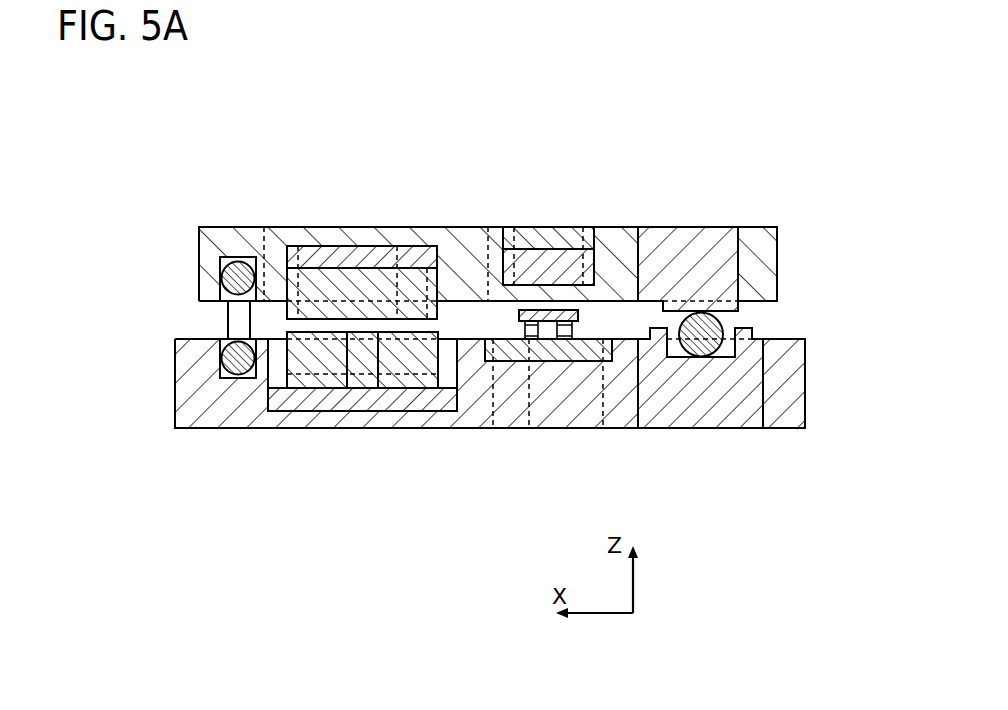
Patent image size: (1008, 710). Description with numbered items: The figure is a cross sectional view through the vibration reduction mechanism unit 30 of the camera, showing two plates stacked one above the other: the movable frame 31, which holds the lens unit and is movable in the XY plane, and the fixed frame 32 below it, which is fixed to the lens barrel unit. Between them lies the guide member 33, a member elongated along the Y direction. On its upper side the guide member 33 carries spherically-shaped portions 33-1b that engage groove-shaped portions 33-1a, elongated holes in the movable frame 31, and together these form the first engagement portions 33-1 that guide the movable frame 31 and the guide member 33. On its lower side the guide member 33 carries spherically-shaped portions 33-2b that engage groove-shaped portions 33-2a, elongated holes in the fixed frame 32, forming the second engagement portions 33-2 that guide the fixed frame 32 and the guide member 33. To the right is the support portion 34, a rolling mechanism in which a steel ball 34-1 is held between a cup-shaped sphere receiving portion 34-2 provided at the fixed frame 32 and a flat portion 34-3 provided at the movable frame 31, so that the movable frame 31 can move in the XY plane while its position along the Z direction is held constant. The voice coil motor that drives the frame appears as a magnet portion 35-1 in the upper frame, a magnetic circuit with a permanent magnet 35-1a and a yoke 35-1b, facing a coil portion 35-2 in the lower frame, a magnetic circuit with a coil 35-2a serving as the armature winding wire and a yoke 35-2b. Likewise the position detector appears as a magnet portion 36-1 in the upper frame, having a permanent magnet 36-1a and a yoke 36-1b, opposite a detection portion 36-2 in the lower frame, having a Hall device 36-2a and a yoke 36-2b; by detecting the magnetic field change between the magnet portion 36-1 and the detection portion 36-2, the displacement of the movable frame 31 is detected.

The vibration reduction mechanism unit 30 is at (803, 258).
The movable frame 31 is at (760, 237).
The fixed frame 32 is at (175, 347).
The guide member 33 is at (233, 318).
The first engagement portions 33-1 is at (175, 185).
The groove-shaped portions 33-1a is at (237, 267).
The spherically-shaped portions 33-1b is at (237, 258).
The second engagement portions 33-2 is at (161, 479).
The groove-shaped portions 33-2a is at (227, 380).
The spherically-shaped portions 33-2b is at (237, 372).
The support portion 34 is at (753, 387).
The steel ball 34-1 is at (700, 352).
The sphere receiving portion 34-2 is at (723, 353).
The flat portion 34-3 is at (727, 307).
The magnet portion 35-1 is at (367, 218).
The permanent magnet 35-1a is at (359, 240).
The yoke 35-1b is at (380, 252).
The coil portion 35-2 is at (347, 437).
The coil 35-2a is at (350, 377).
The yoke 35-2b is at (428, 501).
The magnet portion 36-1 is at (567, 201).
The permanent magnet 36-1a is at (539, 223).
The yoke 36-1b is at (568, 237).
The detection portion 36-2 is at (537, 426).
The Hall device 36-2a is at (552, 343).
The yoke 36-2b is at (508, 350).